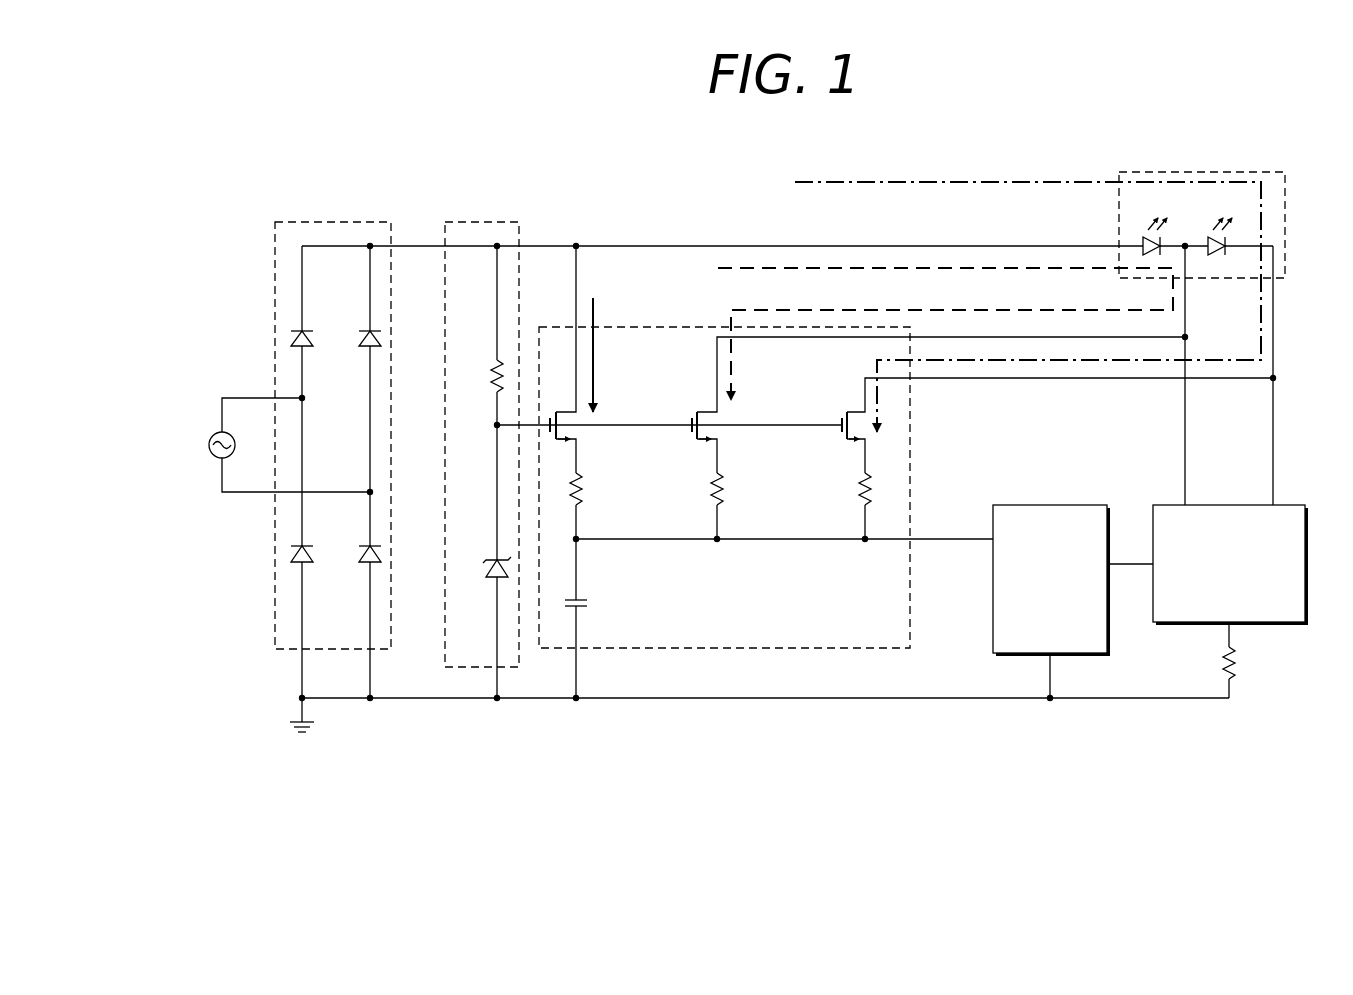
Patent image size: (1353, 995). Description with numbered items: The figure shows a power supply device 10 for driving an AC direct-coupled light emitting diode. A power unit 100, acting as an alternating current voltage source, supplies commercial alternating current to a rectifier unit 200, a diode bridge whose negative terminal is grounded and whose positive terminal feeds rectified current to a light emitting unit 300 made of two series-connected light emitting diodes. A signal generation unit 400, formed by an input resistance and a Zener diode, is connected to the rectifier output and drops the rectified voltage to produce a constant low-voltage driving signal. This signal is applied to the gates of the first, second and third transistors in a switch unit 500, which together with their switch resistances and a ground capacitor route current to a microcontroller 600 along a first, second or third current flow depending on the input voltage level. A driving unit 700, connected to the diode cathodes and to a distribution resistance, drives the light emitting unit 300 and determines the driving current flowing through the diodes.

The power supply device 10 is at (282, 136).
The power unit 100 is at (213, 430).
The rectifier unit 200 is at (333, 222).
The light emitting unit 300 is at (1203, 172).
The signal generation unit 400 is at (485, 222).
The switch unit 500 is at (912, 483).
The microcontroller 600 is at (1073, 601).
The driving unit 700 is at (1230, 601).